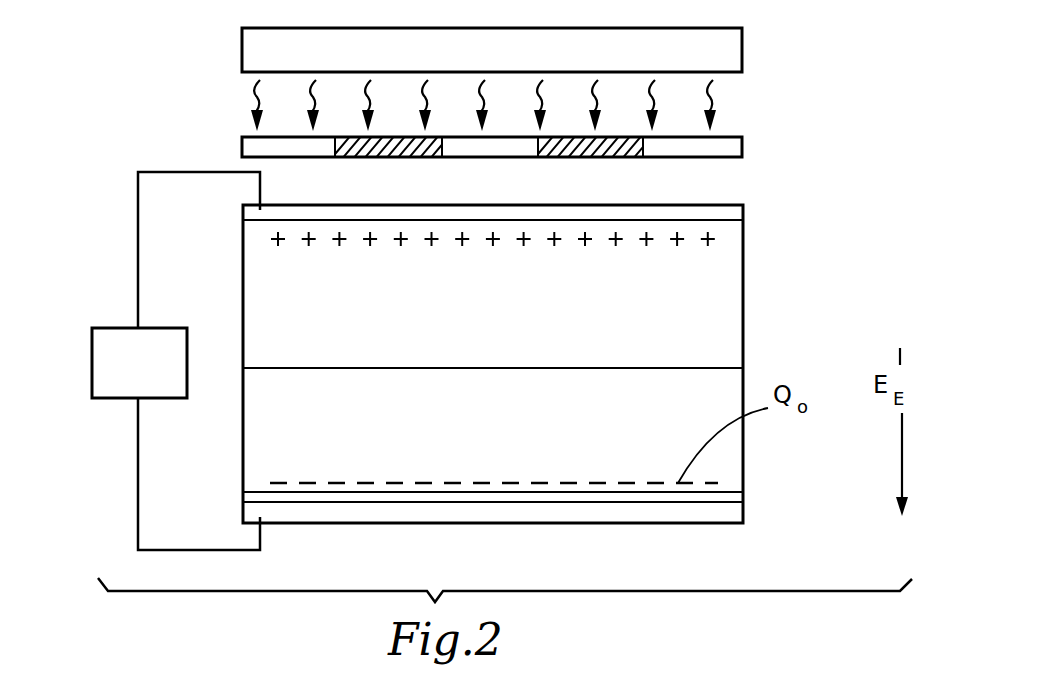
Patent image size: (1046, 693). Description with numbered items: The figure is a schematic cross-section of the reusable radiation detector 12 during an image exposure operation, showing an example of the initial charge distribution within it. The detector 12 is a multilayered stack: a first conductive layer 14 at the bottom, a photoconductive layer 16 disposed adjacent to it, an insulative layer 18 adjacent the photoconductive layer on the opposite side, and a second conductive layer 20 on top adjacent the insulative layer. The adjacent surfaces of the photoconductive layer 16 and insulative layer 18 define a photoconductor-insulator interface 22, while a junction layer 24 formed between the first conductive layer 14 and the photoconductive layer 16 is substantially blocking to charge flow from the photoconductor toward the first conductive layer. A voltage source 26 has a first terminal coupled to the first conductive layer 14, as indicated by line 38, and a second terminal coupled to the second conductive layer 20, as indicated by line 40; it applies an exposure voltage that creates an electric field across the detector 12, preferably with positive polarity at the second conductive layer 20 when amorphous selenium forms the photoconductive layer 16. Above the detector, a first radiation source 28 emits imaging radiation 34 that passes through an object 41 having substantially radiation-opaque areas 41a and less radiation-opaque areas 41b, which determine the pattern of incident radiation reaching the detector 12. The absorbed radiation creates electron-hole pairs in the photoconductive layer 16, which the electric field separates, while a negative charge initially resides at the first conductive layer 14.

The radiation detector 12 is at (800, 334).
The first conductive layer 14 is at (735, 512).
The photoconductive layer 16 is at (733, 457).
The insulative layer 18 is at (735, 303).
The second conductive layer 20 is at (738, 213).
The photoconductor-insulator interface 22 is at (243, 368).
The junction layer 24 is at (243, 497).
The voltage source 26 is at (92, 365).
The first radiation source 28 is at (695, 28).
The imaging radiation 34 is at (707, 97).
The line 38 is at (138, 484).
The line 40 is at (138, 237).
The object 41 is at (236, 112).
The radiation-opaque areas 41a is at (403, 158).
The less radiation-opaque areas 41b is at (242, 150).